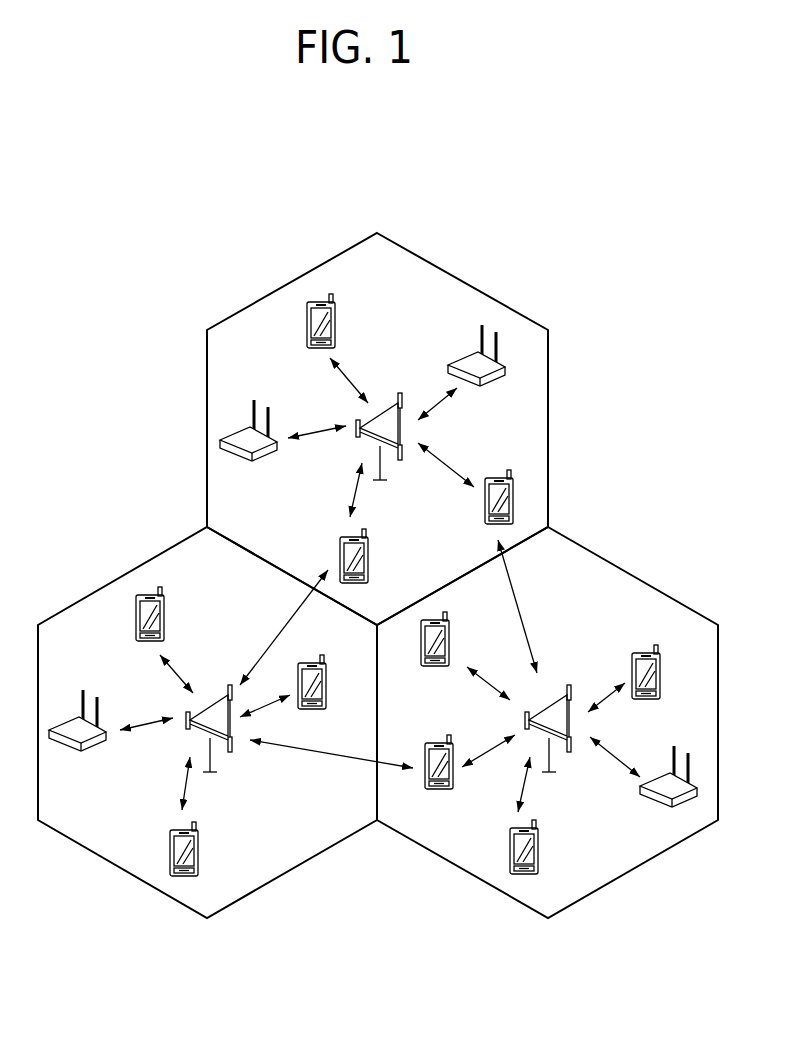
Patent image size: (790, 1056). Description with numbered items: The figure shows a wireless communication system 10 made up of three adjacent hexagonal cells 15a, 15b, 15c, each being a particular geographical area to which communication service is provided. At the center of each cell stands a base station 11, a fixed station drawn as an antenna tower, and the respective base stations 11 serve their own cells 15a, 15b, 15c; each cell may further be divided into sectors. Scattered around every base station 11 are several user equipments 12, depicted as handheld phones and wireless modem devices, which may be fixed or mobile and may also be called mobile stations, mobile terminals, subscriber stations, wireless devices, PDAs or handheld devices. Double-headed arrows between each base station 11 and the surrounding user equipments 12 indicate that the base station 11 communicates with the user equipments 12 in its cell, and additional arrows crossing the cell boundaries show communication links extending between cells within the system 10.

The wireless communication system 10 is at (378, 575).
The base station 11 is at (397, 413).
The user equipment 12 is at (336, 322).
The cell 15a is at (548, 418).
The cell 15b is at (655, 585).
The cell 15c is at (100, 586).